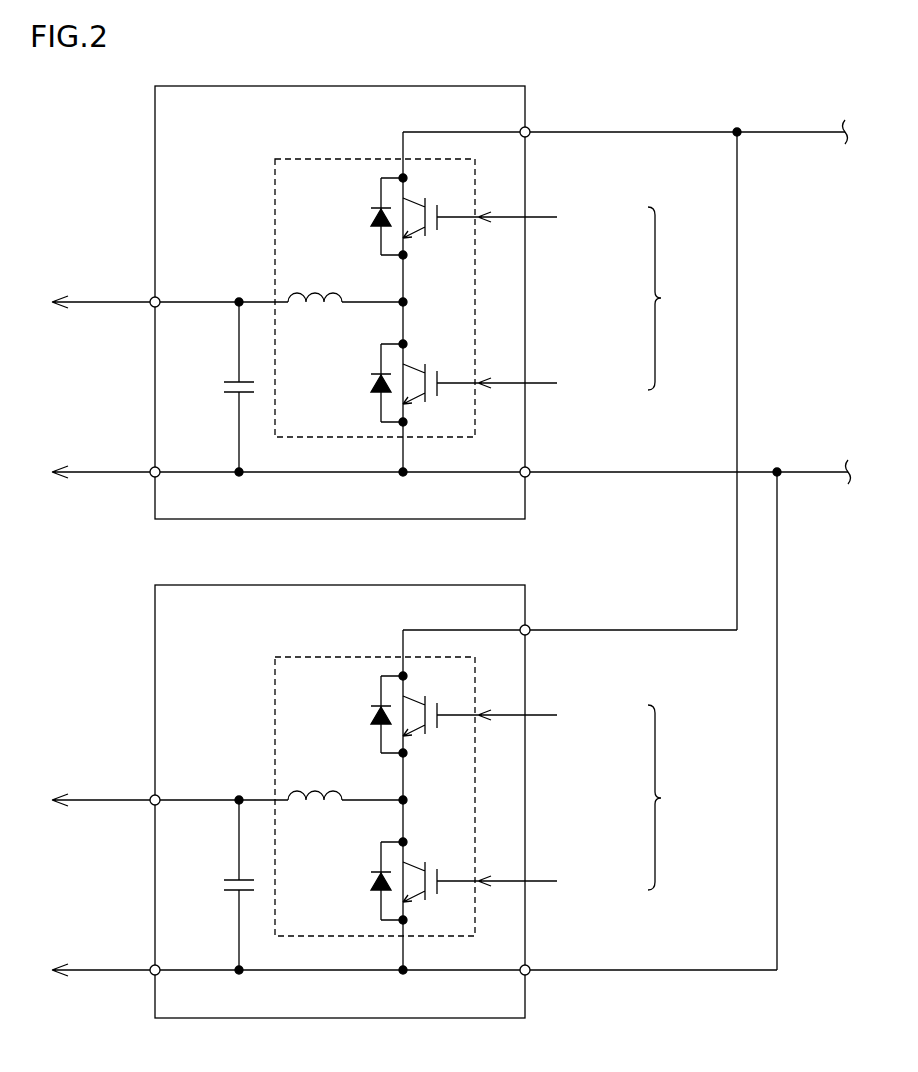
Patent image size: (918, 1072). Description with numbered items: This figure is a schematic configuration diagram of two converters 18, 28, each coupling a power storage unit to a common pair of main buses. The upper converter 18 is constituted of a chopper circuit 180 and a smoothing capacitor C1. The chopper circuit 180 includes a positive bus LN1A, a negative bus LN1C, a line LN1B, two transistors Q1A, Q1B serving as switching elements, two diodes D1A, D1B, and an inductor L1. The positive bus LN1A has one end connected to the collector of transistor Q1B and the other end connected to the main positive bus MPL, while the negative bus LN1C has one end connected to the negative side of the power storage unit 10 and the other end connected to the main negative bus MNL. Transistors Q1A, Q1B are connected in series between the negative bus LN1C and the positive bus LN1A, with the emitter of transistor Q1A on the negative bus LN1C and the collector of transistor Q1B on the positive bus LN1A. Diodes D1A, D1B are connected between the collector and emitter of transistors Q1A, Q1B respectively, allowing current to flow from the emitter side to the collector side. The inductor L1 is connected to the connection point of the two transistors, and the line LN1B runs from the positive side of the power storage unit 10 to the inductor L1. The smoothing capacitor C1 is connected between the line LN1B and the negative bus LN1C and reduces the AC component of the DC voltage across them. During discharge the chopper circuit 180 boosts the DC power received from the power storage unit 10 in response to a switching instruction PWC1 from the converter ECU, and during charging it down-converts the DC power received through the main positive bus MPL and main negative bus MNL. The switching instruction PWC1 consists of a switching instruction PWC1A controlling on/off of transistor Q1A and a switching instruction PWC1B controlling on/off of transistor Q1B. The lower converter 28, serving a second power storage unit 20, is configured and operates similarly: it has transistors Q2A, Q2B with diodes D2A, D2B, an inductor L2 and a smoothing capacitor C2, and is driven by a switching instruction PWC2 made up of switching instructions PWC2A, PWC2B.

The power storage unit 10 is at (93, 387).
The power storage unit 20 is at (93, 885).
The converter 18 is at (490, 86).
The converter 28 is at (490, 585).
The chopper circuit 180 is at (305, 159).
The positive bus LN1A is at (425, 132).
The line LN1B is at (172, 302).
The negative bus LN1C is at (310, 474).
The inductor L1 is at (315, 285).
The inductor L2 is at (315, 783).
The smoothing capacitor C1 is at (237, 381).
The smoothing capacitor C2 is at (237, 879).
The transistor Q1A is at (434, 383).
The transistor Q1B is at (434, 216).
The transistor Q2A is at (434, 881).
The transistor Q2B is at (434, 714).
The diode D1A is at (367, 383).
The diode D1B is at (367, 216).
The diode D2A is at (367, 881).
The diode D2B is at (367, 714).
The switching instruction PWC1 is at (687, 298).
The switching instruction PWC1A is at (536, 383).
The switching instruction PWC1B is at (536, 217).
The switching instruction PWC2 is at (687, 797).
The switching instruction PWC2A is at (536, 881).
The switching instruction PWC2B is at (536, 715).
The main positive bus MPL is at (819, 131).
The main negative bus MNL is at (818, 474).